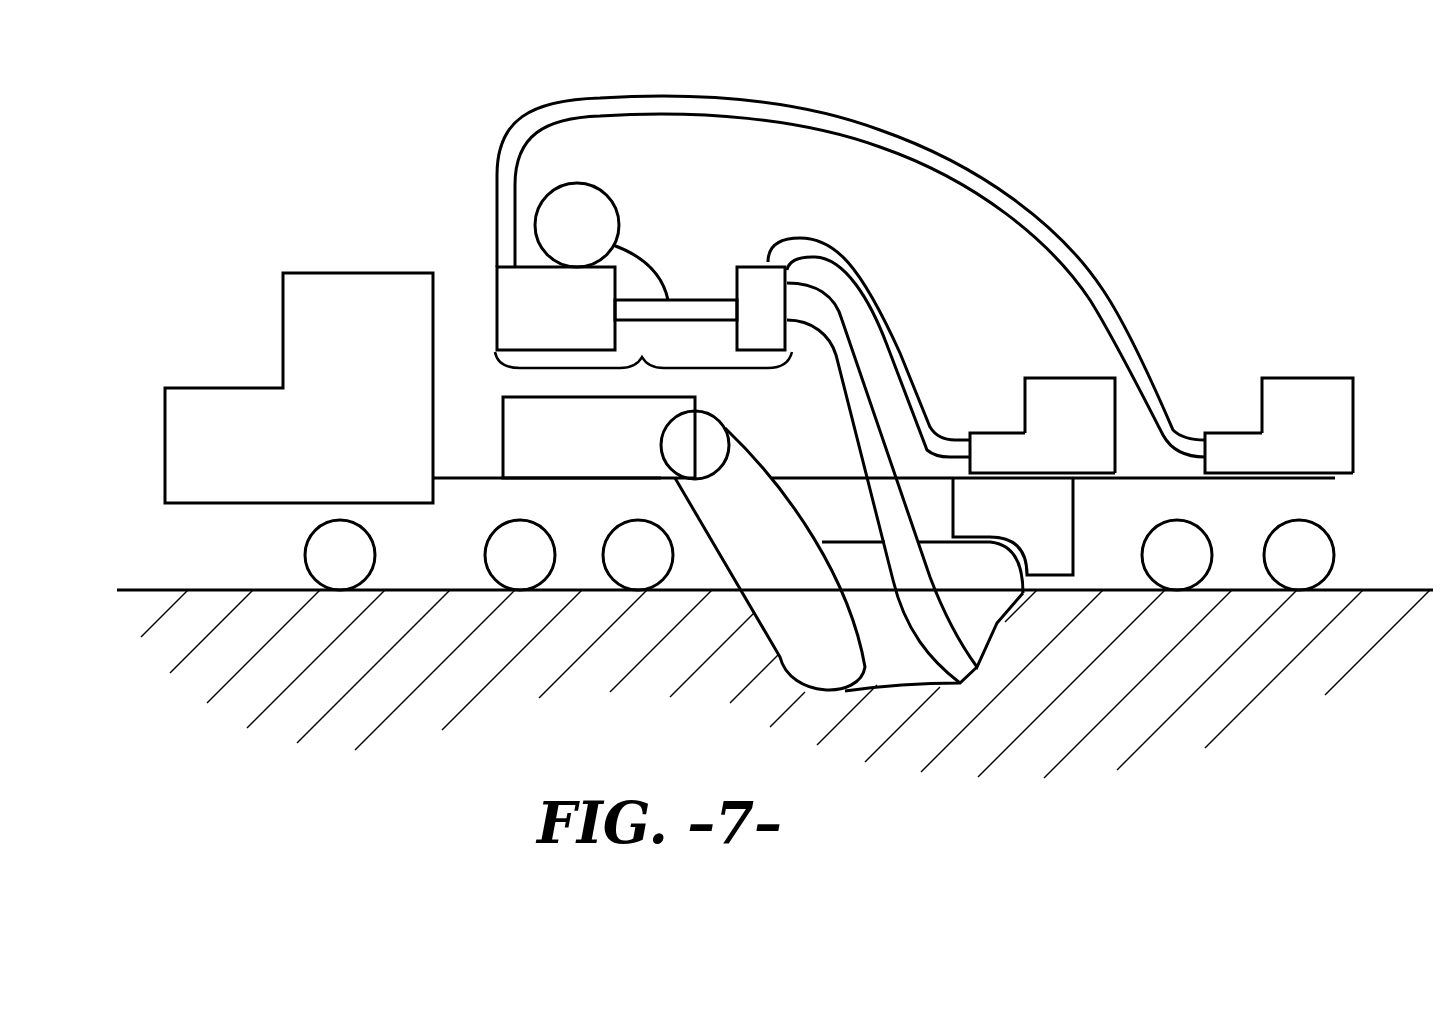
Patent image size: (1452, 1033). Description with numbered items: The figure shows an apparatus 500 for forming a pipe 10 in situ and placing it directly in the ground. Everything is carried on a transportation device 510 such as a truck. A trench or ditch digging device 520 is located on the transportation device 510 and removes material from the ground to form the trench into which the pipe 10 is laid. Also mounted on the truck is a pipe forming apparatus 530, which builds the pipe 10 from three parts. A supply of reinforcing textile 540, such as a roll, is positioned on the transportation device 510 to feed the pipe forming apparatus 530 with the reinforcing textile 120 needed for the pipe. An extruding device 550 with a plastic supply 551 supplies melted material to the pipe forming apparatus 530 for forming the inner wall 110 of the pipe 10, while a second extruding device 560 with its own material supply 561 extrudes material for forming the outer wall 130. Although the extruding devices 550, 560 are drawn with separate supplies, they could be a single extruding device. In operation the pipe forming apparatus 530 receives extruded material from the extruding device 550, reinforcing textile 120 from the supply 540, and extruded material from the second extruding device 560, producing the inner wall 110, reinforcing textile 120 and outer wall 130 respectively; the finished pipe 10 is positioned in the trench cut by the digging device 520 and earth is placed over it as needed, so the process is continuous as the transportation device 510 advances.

The apparatus 500 is at (333, 185).
The transportation device 510 is at (283, 343).
The trench or ditch digging device 520 is at (613, 450).
The pipe forming apparatus 530 is at (643, 279).
The supply of reinforcing textile 540 is at (605, 195).
The inner wall 110 is at (668, 320).
The reinforcing textile 120 is at (648, 260).
The outer wall 130 is at (818, 315).
The pipe 10 is at (848, 412).
The extruding device 550 is at (1233, 432).
The plastic supply 551 is at (1288, 378).
The second extruding device 560 is at (1023, 415).
The material supply 561 is at (1054, 378).